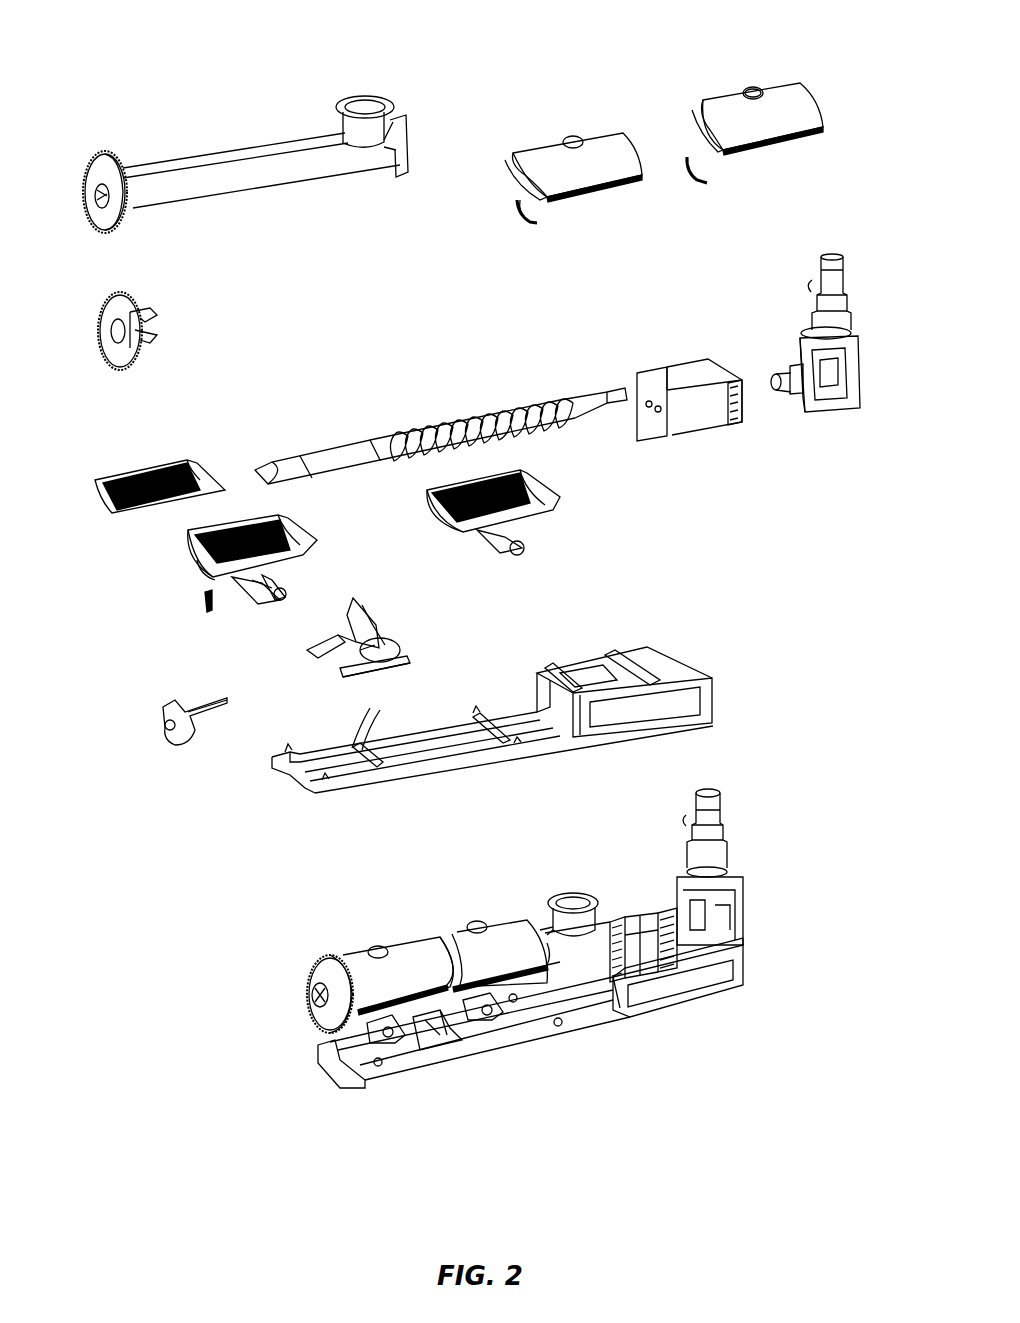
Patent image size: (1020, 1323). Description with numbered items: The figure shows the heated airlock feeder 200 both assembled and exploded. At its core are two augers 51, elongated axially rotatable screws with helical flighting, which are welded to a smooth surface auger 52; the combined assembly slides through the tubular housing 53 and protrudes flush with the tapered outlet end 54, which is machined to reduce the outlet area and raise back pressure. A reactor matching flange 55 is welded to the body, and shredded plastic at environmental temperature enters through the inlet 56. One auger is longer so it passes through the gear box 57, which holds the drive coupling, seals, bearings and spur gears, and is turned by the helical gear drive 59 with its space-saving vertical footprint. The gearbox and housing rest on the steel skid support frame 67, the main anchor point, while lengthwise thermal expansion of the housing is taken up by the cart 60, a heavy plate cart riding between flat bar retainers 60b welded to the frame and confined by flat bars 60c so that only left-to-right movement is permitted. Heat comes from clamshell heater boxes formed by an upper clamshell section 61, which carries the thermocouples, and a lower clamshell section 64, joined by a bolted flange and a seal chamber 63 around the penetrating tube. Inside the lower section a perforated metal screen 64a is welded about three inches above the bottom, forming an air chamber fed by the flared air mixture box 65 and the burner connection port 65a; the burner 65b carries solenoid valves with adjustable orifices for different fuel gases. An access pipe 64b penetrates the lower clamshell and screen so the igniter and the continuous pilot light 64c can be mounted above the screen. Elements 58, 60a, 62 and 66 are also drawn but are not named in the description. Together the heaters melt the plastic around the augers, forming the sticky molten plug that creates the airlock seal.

The augers 51 is at (490, 417).
The smooth surface auger 52 is at (327, 447).
The housing 53 is at (272, 144).
The tapered outlet end 54 is at (150, 340).
The reactor matching flange 55 is at (113, 154).
The inlet 56 is at (363, 110).
The gear box 57 is at (707, 413).
The fitting 58 is at (793, 367).
The gear drive 59 is at (823, 323).
The cart 60 is at (377, 620).
The bearing support fin 60a is at (373, 643).
The flat bar retainers 60b is at (407, 662).
The flat bars 60c is at (350, 673).
The upper clamshell section 61 is at (567, 147).
The boss 62 is at (750, 90).
The seal chamber 63 is at (517, 207).
The lower clamshell section 64 is at (297, 553).
The perforated metal screen 64a is at (112, 477).
The access pipe 64b is at (217, 582).
The pilot light 64c is at (200, 605).
The air mixture box 65 is at (260, 587).
The burner connection port 65a is at (287, 597).
The burner 65b is at (207, 737).
The end block 66 is at (677, 670).
The support frame 67 is at (687, 728).
The heated airlock feeder 200 is at (767, 923).